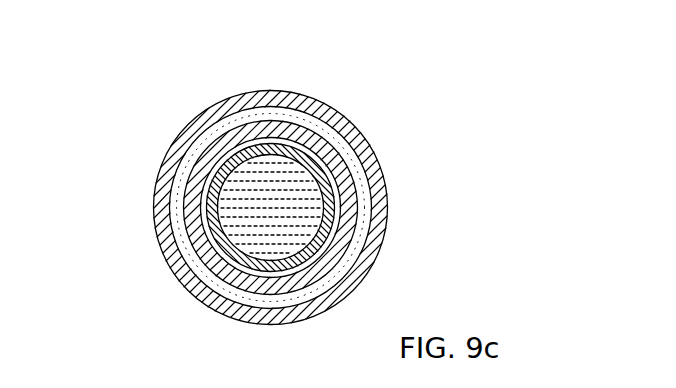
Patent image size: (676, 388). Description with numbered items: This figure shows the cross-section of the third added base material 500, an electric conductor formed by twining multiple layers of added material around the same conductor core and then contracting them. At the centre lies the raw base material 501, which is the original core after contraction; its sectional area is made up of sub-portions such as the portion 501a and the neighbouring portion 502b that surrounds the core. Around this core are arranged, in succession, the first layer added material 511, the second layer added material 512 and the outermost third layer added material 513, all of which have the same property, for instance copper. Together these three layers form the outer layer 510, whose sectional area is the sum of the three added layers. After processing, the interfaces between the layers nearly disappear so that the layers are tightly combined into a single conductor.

The third added base material (electric conductor) 500 is at (128, 103).
The raw base material after contraction 501 is at (472, 17).
The portion of contracted raw base material 501a is at (278, 163).
The inner insulation layer 502b is at (310, 160).
The outer layer 510 is at (520, 137).
The first layer added material 511 is at (345, 210).
The second layer added material 512 is at (343, 243).
The third layer added material 513 is at (357, 267).